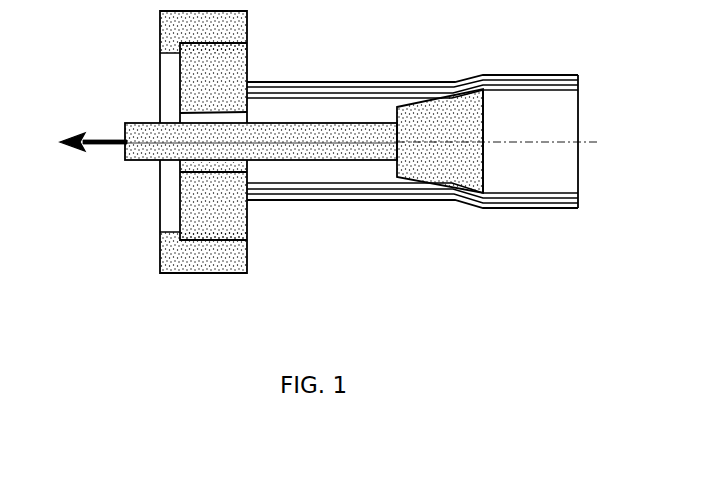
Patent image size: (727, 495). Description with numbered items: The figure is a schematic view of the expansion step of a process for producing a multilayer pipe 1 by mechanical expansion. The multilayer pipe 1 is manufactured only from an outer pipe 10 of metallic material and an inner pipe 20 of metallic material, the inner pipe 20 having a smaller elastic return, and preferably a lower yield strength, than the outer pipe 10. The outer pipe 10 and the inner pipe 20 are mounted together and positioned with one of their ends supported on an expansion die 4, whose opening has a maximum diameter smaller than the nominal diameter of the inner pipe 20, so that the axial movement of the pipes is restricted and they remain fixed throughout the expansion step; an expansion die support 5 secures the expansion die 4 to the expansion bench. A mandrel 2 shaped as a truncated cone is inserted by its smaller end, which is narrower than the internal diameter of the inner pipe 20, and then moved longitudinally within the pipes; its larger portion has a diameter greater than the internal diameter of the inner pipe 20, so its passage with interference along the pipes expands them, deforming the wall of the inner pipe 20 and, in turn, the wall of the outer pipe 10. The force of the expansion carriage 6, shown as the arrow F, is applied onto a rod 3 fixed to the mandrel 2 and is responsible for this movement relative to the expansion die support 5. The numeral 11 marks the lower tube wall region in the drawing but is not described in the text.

The multilayer pipe 1 is at (545, 68).
The mandrel 2 is at (404, 205).
The rod 3 is at (313, 135).
The expansion die 4 is at (230, 62).
The expansion die support 5 is at (168, 253).
The expansion carriage 6 is at (85, 118).
The outer pipe 10 is at (545, 210).
The lower tube section 11 is at (318, 212).
The inner pipe 20 is at (566, 194).